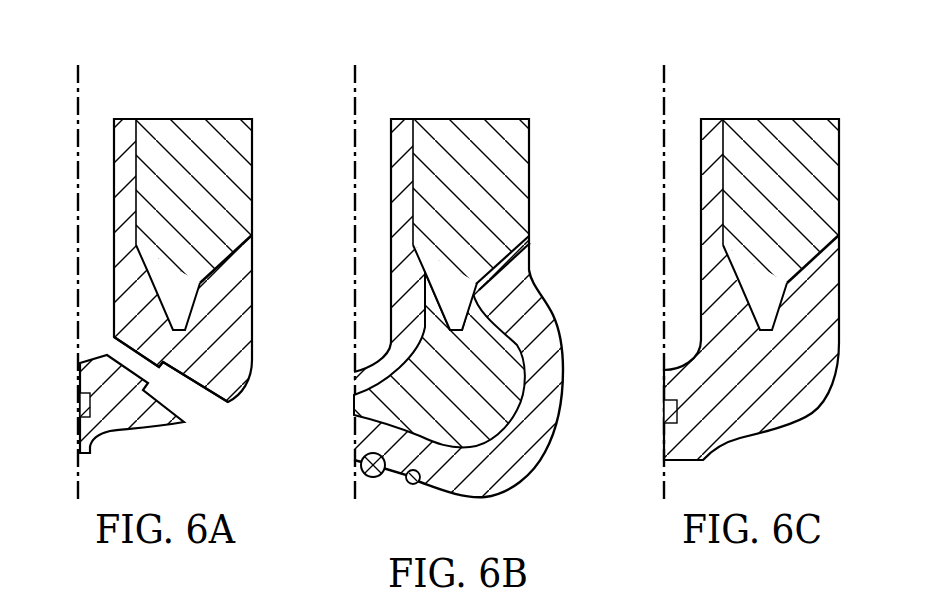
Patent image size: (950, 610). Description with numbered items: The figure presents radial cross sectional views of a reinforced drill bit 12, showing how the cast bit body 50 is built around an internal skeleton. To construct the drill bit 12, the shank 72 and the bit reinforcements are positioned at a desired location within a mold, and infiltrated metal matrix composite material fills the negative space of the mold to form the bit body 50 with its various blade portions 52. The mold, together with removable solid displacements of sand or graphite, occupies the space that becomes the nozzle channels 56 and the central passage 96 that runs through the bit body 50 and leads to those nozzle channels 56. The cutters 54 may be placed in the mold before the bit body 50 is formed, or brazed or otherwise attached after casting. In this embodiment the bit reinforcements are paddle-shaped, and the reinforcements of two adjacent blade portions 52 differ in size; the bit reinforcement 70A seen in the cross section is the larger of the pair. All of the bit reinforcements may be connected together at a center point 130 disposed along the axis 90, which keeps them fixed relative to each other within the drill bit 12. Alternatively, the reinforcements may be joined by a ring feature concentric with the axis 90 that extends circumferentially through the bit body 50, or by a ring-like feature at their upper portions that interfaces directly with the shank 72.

In FIG. 6A, the drill bit 12 is at (219, 239).
In FIG. 6B, the drill bit 12 is at (488, 286).
In FIG. 6C, the drill bit 12 is at (787, 238).
In FIG. 6A, the bit body 50 is at (262, 258).
In FIG. 6B, the bit body 50 is at (539, 258).
In FIG. 6C, the bit body 50 is at (849, 260).
In FIG. 6B, the blade portions 52 is at (553, 370).
In FIG. 6B, the cutters 54 is at (371, 478).
In FIG. 6A, the nozzle channels 56 is at (212, 401).
In FIG. 6B, the bit reinforcement 70A is at (497, 421).
In FIG. 6A, the shank 72 is at (195, 128).
In FIG. 6B, the shank 72 is at (472, 128).
In FIG. 6C, the shank 72 is at (782, 128).
In FIG. 6A, the axis 90 is at (77, 138).
In FIG. 6B, the axis 90 is at (354, 138).
In FIG. 6C, the axis 90 is at (663, 138).
In FIG. 6A, the central passage 96 is at (97, 134).
In FIG. 6B, the central passage 96 is at (374, 134).
In FIG. 6C, the central passage 96 is at (684, 134).
In FIG. 6A, the center point 130 is at (80, 403).
In FIG. 6B, the center point 130 is at (356, 408).
In FIG. 6C, the center point 130 is at (664, 410).